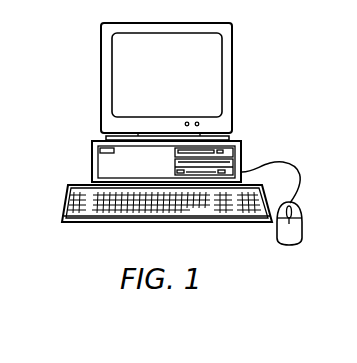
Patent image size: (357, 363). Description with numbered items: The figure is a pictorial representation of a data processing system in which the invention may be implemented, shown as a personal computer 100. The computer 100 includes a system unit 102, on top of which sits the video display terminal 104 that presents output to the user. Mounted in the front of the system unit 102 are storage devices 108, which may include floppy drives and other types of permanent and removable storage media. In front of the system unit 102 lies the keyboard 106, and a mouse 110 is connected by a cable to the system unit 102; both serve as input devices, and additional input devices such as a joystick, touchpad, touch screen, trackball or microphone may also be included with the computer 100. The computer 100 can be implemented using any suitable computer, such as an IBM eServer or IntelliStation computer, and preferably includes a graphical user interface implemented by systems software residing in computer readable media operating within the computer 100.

The computer 100 is at (73, 64).
The system unit 102 is at (92, 160).
The video display terminal 104 is at (232, 77).
The keyboard 106 is at (82, 222).
The storage devices 108 is at (215, 153).
The mouse 110 is at (289, 245).